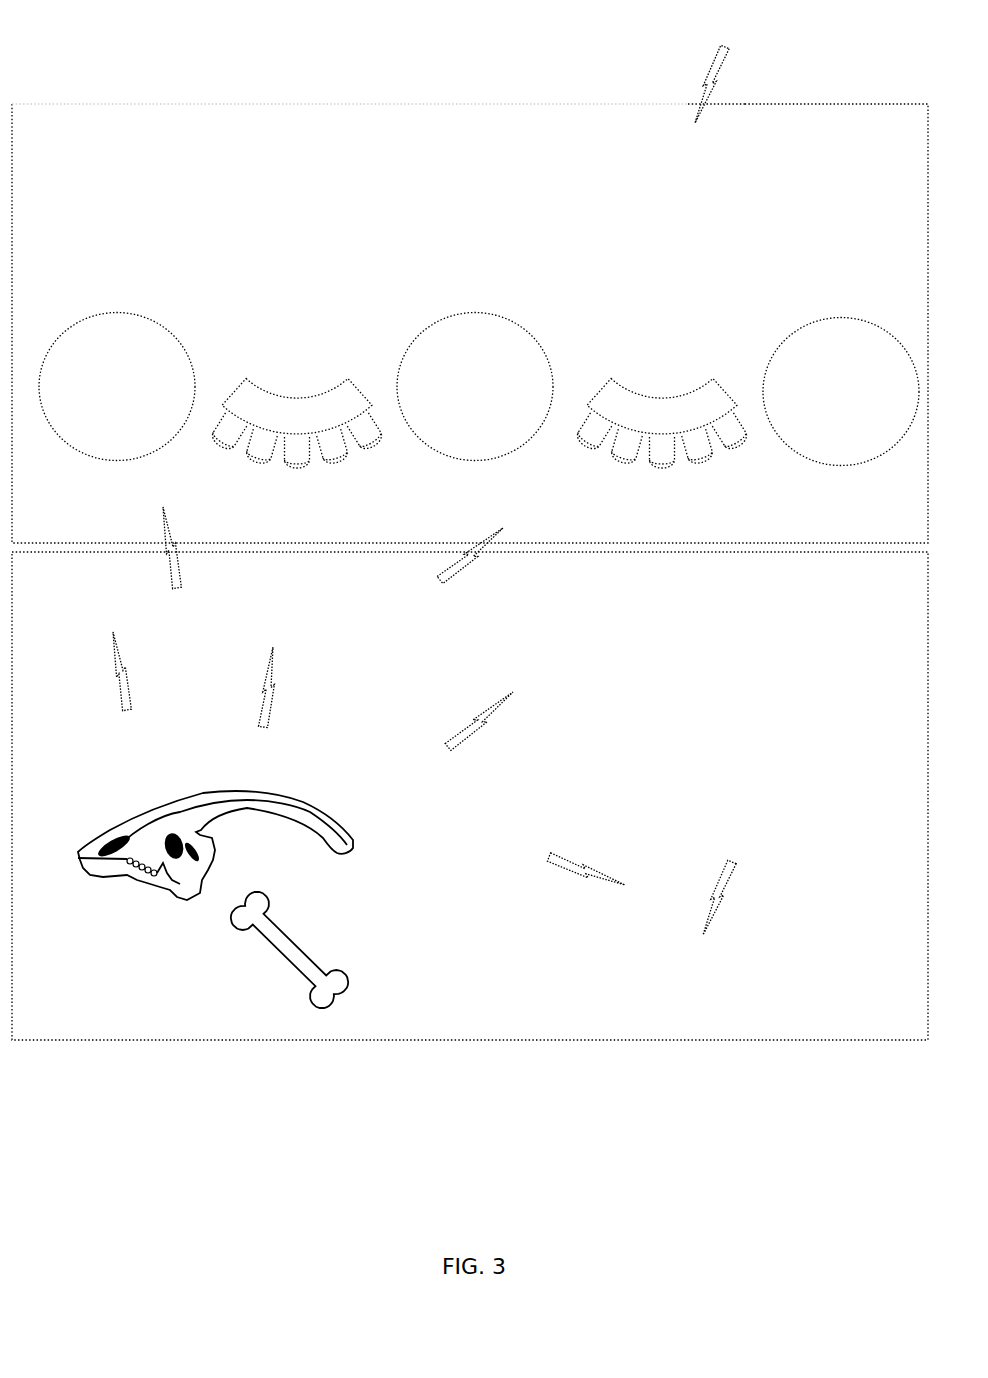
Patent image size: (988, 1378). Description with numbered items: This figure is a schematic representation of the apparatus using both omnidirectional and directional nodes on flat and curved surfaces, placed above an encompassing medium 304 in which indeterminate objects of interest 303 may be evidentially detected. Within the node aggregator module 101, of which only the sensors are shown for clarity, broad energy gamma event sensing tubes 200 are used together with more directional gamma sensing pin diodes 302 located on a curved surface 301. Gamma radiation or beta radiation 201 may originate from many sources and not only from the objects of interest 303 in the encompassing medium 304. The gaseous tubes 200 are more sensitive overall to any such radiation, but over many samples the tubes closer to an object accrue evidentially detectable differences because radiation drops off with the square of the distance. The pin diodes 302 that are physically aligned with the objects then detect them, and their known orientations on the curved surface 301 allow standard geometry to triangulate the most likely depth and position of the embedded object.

The node aggregator module 101 is at (238, 90).
The broad energy gamma event sensing tubes 200 is at (98, 395).
The gamma radiation or beta radiation 201 is at (688, 90).
The curved surface 301 is at (282, 426).
The gamma sensing pin diodes 302 is at (215, 462).
The indeterminate object or objects of interest 303 is at (322, 857).
The encompassing medium 304 is at (292, 1040).